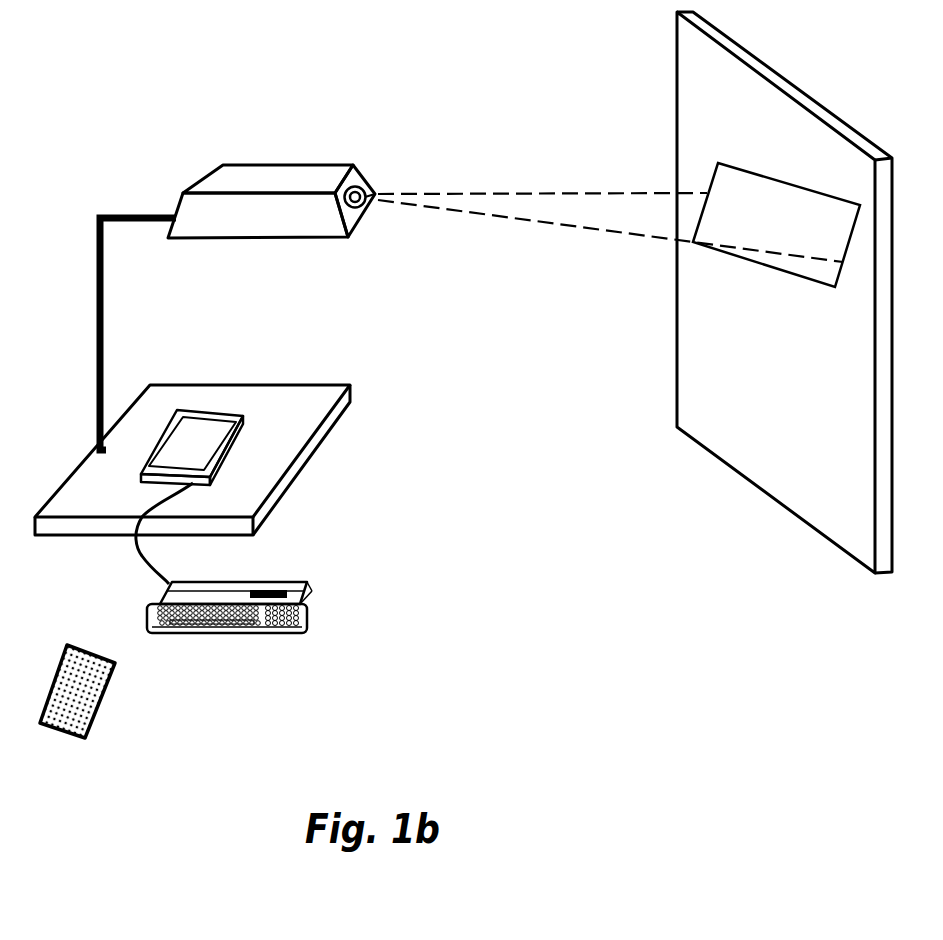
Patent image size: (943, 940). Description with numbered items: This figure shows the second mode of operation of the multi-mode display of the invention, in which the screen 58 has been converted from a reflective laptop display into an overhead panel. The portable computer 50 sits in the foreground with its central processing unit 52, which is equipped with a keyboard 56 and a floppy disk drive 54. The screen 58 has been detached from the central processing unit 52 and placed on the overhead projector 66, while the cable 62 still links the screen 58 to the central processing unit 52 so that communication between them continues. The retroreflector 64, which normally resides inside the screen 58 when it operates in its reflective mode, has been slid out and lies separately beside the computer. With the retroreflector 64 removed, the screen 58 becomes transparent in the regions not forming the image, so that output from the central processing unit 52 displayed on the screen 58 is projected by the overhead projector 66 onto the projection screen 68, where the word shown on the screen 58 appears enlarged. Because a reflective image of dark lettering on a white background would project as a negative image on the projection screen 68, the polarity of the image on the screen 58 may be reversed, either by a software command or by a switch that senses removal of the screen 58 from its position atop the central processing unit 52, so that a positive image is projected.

The portable computer 50 is at (300, 630).
The central processing unit 52 is at (307, 593).
The floppy disk drive 54 is at (262, 586).
The keyboard 56 is at (220, 635).
The screen 58 is at (222, 412).
The cable 62 is at (140, 553).
The retroreflector 64 is at (93, 718).
The overhead projector 66 is at (352, 397).
The projection screen 68 is at (843, 547).